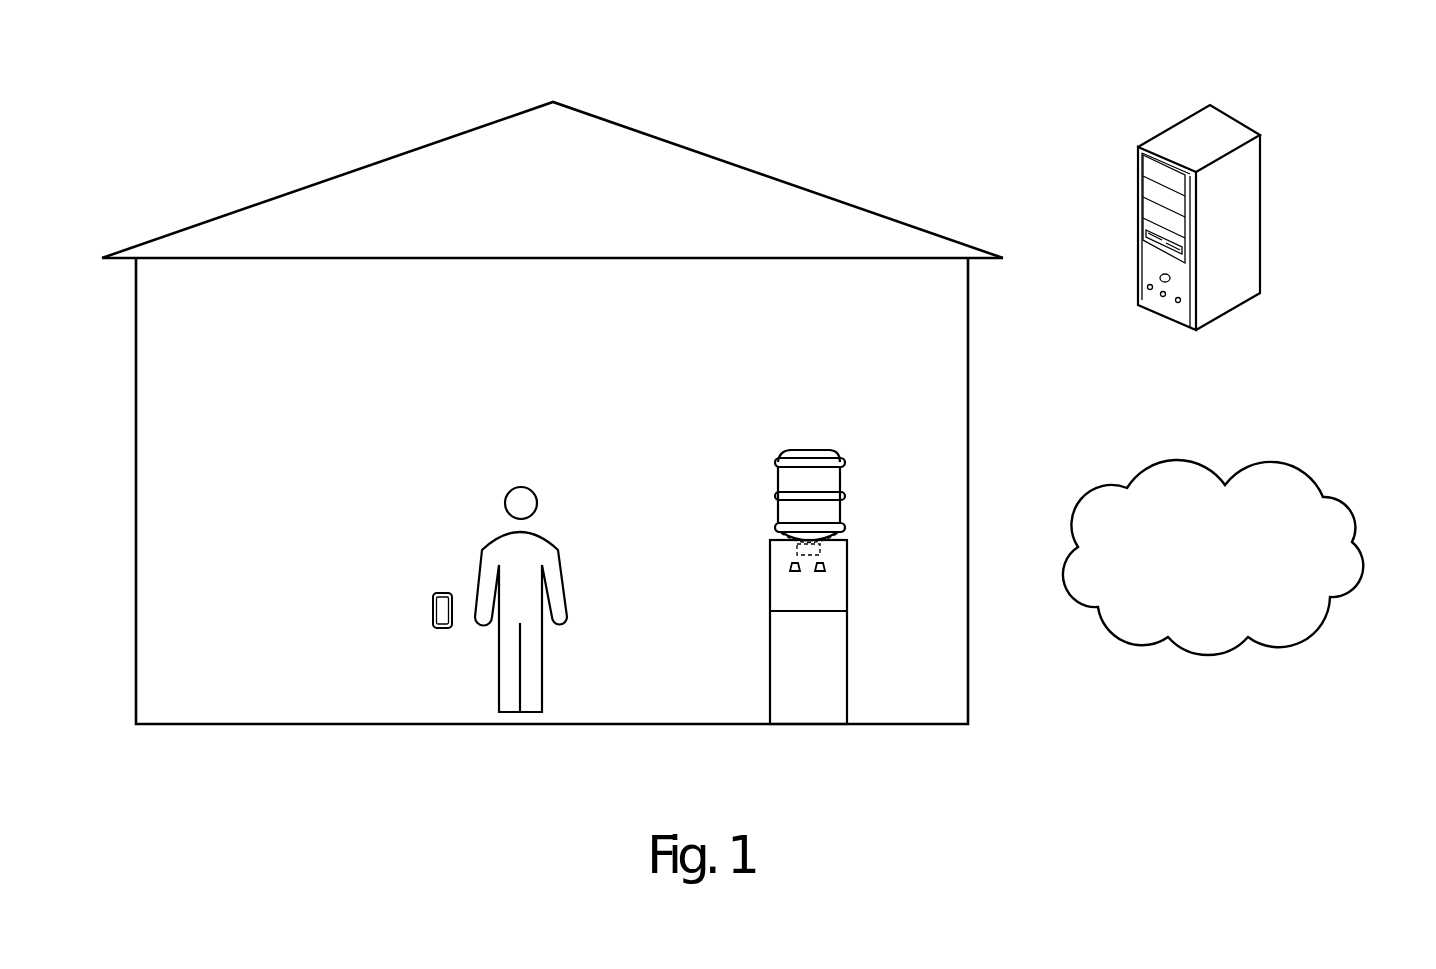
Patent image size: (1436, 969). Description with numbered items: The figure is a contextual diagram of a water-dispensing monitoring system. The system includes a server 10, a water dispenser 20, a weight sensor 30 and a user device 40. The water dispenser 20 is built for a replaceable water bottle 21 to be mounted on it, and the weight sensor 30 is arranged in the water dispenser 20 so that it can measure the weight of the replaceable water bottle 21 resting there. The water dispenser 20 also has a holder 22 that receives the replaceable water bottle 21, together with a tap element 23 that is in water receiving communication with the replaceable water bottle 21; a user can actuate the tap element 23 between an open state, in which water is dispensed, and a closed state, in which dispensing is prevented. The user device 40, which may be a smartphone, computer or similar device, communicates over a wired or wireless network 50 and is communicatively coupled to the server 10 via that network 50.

The server 10 is at (1240, 108).
The water dispenser 20 is at (769, 580).
The replaceable water bottle 21 is at (810, 449).
The holder 22 is at (795, 542).
The tap element 23 is at (827, 567).
The weight sensor 30 is at (835, 525).
The user device 40 is at (430, 608).
The network 50 is at (1285, 462).